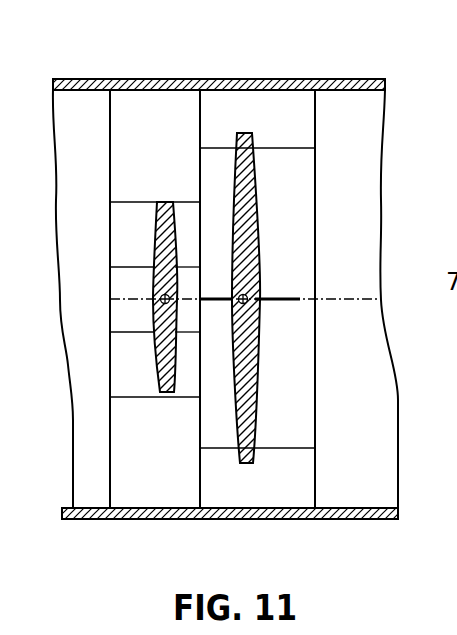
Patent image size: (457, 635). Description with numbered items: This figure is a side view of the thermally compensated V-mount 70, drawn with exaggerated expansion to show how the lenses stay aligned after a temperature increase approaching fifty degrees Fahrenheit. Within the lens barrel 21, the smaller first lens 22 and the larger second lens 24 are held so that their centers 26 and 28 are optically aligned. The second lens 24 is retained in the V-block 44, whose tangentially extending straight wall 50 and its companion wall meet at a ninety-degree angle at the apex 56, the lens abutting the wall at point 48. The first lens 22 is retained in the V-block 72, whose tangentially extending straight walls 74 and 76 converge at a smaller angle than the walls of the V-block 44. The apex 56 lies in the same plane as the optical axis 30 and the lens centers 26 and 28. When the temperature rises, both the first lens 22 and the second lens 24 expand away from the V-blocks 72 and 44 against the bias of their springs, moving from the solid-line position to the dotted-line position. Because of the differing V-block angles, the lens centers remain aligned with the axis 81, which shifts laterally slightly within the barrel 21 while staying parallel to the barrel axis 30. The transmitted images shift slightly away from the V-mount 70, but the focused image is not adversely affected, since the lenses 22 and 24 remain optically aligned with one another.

The lens barrel 21 is at (122, 79).
The first lens 22 is at (158, 235).
The second lens 24 is at (258, 205).
The center of first lens 26 is at (161, 300).
The center of second lens 28 is at (248, 296).
The optical axis 30 is at (358, 299).
The V-block 44 is at (292, 112).
The abutment point 48 is at (298, 408).
The tangentially extending straight wall 50 is at (310, 165).
The apex 56 is at (275, 302).
The thermally compensated V-mount 70 is at (368, 199).
The V-block 72 is at (121, 164).
The tangentially extending straight wall 74 is at (121, 254).
The tangentially extending straight wall 76 is at (122, 363).
The axis 81 is at (365, 238).